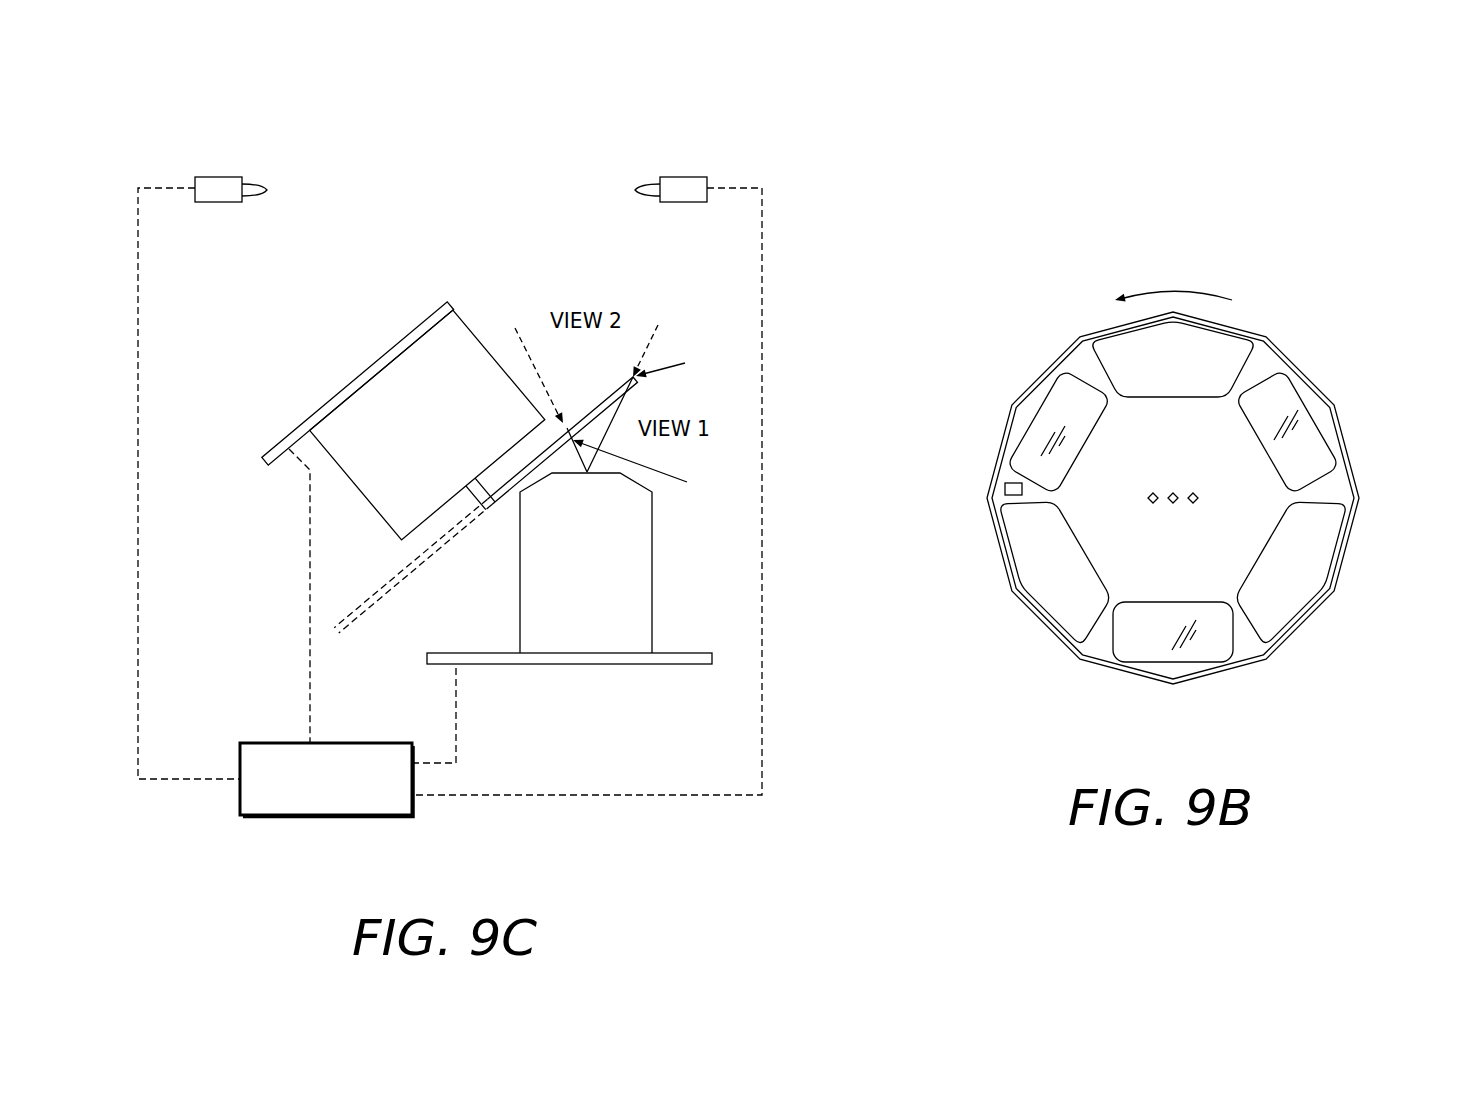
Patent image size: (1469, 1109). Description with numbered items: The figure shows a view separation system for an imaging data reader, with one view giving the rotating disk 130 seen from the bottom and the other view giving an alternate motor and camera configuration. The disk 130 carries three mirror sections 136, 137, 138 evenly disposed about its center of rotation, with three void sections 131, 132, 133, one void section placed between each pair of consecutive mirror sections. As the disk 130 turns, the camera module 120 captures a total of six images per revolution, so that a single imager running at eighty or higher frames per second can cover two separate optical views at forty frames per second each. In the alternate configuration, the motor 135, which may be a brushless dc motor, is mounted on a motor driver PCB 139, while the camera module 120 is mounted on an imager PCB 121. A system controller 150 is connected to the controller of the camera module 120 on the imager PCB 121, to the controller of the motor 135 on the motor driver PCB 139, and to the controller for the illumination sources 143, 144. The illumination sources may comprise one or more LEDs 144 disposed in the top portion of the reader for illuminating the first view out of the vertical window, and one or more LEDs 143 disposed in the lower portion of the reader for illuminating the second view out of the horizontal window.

In FIG. 9C, the camera module 120 is at (640, 578).
In FIG. 9C, the imager PCB 121 is at (582, 664).
In FIG. 9C, the rotating disk 130 is at (583, 415).
In FIG. 9B, the rotating disk 130 is at (1287, 262).
In FIG. 9B, the void section 131 is at (1230, 360).
In FIG. 9B, the void section 132 is at (1308, 548).
In FIG. 9B, the void section 133 is at (1035, 540).
In FIG. 9C, the motor 135 is at (378, 487).
In FIG. 9B, the mirror section 136 is at (1305, 450).
In FIG. 9B, the mirror section 137 is at (1150, 640).
In FIG. 9B, the mirror section 138 is at (1063, 410).
In FIG. 9C, the motor driver PCB 139 is at (402, 340).
In FIG. 9C, the LEDs 143 is at (218, 177).
In FIG. 9C, the LEDs 144 is at (683, 177).
In FIG. 9C, the system controller 150 is at (342, 815).